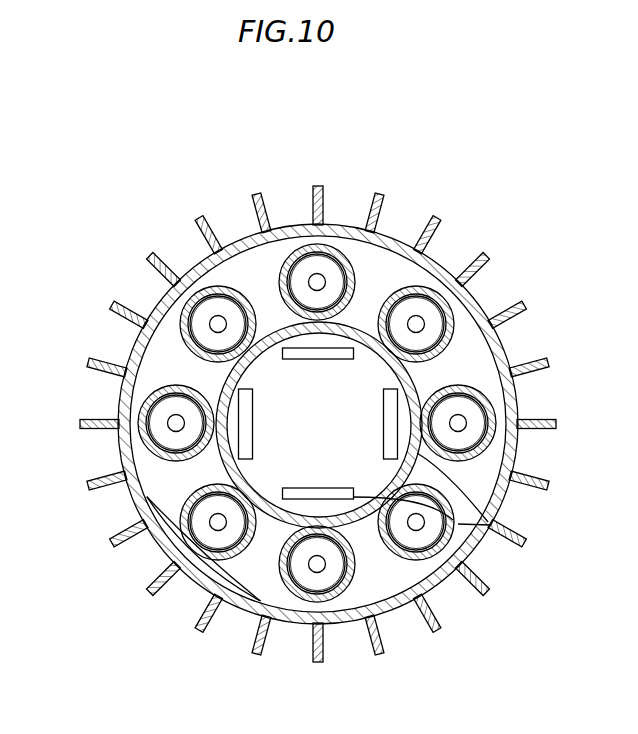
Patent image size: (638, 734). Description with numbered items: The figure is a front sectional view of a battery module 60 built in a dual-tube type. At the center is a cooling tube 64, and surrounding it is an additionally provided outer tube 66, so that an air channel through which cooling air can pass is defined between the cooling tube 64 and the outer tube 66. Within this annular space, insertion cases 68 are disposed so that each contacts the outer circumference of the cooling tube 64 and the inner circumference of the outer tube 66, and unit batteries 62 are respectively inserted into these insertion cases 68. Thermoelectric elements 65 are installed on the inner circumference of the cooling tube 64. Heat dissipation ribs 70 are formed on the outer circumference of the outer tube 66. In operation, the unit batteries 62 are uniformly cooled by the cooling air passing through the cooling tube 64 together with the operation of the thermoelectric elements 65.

The battery module 60 is at (305, 434).
The unit battery 62 is at (317, 434).
The cooling tube 64 is at (257, 600).
The thermoelectric element 65 is at (257, 343).
The outer tube 66 is at (118, 443).
The insertion case 68 is at (134, 505).
The heat dissipation rib 70 is at (521, 300).